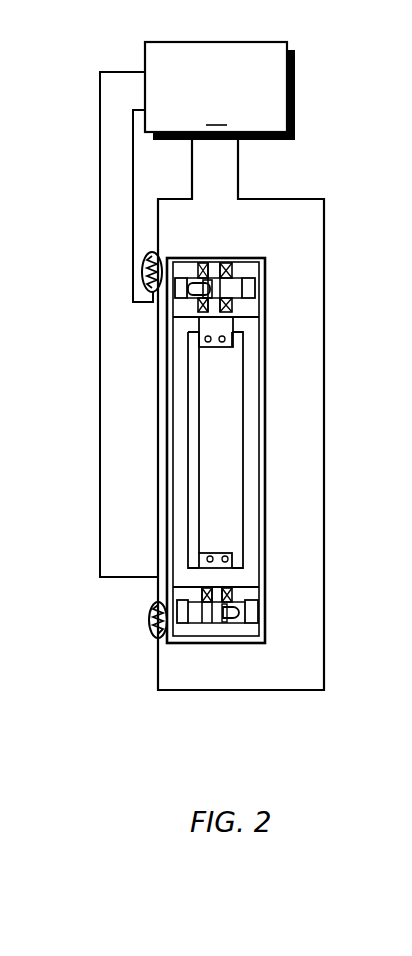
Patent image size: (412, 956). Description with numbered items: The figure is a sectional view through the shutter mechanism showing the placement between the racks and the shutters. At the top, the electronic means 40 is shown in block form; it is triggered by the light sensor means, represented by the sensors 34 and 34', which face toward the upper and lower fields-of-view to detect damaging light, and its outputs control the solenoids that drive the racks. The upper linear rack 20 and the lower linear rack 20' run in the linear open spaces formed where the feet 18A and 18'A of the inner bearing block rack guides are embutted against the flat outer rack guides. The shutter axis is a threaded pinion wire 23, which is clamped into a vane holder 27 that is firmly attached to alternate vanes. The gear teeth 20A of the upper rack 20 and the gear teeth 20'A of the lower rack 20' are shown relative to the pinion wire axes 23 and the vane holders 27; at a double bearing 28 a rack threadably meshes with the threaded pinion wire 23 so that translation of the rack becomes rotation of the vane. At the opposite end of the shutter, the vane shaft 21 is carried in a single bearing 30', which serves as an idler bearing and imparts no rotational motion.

The electronic means 40 is at (220, 91).
The sensor 34 is at (171, 250).
The sensor 34' is at (113, 646).
The upper linear rack 20 is at (219, 260).
The double bearing 28 is at (234, 268).
The gear teeth 20A is at (193, 297).
The feet 18A is at (252, 288).
The pinion wire 23 is at (212, 289).
The vane holder 27 is at (222, 323).
The vane shaft 21 is at (222, 580).
The gear teeth 20'A is at (250, 585).
The feet 18'A is at (317, 601).
The lower linear rack 20' is at (269, 679).
The single bearing 30' is at (207, 677).